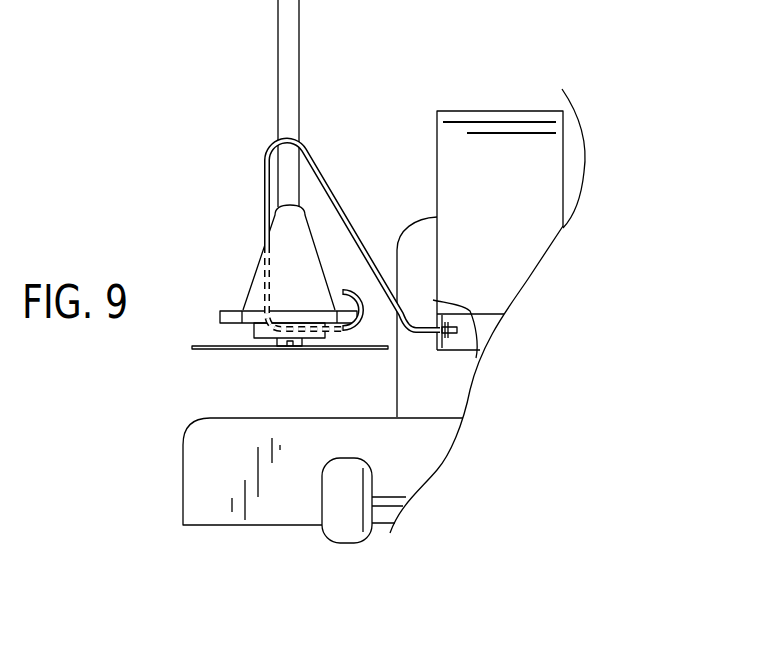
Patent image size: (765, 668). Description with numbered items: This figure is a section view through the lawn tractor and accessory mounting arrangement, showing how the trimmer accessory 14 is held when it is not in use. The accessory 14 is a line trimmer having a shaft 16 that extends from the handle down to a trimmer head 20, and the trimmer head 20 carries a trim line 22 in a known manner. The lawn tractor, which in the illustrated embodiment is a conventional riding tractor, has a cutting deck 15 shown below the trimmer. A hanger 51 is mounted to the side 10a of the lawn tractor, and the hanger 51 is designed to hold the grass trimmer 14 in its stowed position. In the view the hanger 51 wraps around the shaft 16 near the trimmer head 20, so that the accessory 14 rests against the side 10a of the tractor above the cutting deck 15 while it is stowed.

The side of the lawn tractor 10a is at (441, 336).
The accessory 14 is at (208, 92).
The cutting deck 15 is at (202, 443).
The shaft 16 is at (287, 47).
The trimmer head 20 is at (287, 237).
The trim line 22 is at (228, 350).
The hanger 51 is at (336, 198).